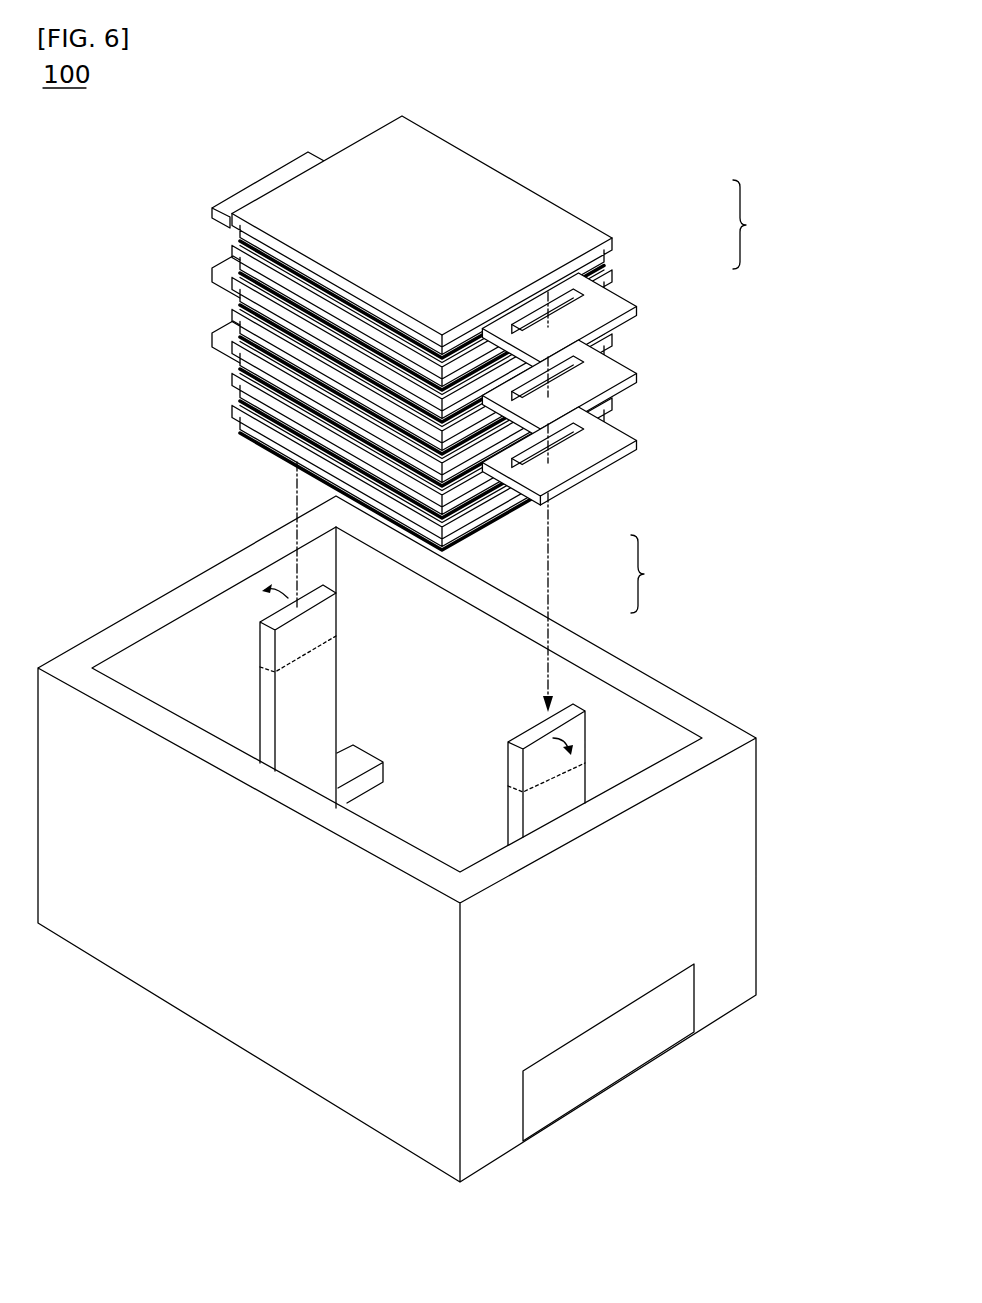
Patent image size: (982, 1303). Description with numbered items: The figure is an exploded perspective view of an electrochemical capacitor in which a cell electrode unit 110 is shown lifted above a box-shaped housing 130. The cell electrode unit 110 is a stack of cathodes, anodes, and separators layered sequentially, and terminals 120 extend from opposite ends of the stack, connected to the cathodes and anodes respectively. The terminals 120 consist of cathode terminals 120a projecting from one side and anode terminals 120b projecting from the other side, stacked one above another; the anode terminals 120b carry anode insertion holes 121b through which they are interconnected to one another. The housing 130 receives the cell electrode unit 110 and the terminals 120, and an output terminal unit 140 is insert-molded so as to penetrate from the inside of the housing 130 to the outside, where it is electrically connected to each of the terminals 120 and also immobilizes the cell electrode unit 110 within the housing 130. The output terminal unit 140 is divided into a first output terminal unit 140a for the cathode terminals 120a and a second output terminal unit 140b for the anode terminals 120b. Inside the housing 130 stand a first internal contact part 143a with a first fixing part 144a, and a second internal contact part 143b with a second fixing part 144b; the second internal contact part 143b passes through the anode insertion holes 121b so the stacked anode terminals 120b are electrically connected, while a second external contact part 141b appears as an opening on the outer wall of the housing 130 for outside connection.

The cell electrode unit 110 is at (469, 326).
The terminals 120 is at (764, 224).
The cathode terminals 120a is at (318, 163).
The anode terminals 120b is at (602, 297).
The anode insertion holes 121b is at (580, 297).
The housing 130 is at (260, 1048).
The output terminal unit 140 is at (447, 746).
The first output terminal unit 140a is at (335, 652).
The second output terminal unit 140b is at (677, 772).
The second external contact part 141b is at (607, 1077).
The first internal contact part 143a is at (287, 705).
The second internal contact part 143b is at (553, 795).
The first fixing part 144a is at (343, 599).
The second fixing part 144b is at (560, 760).